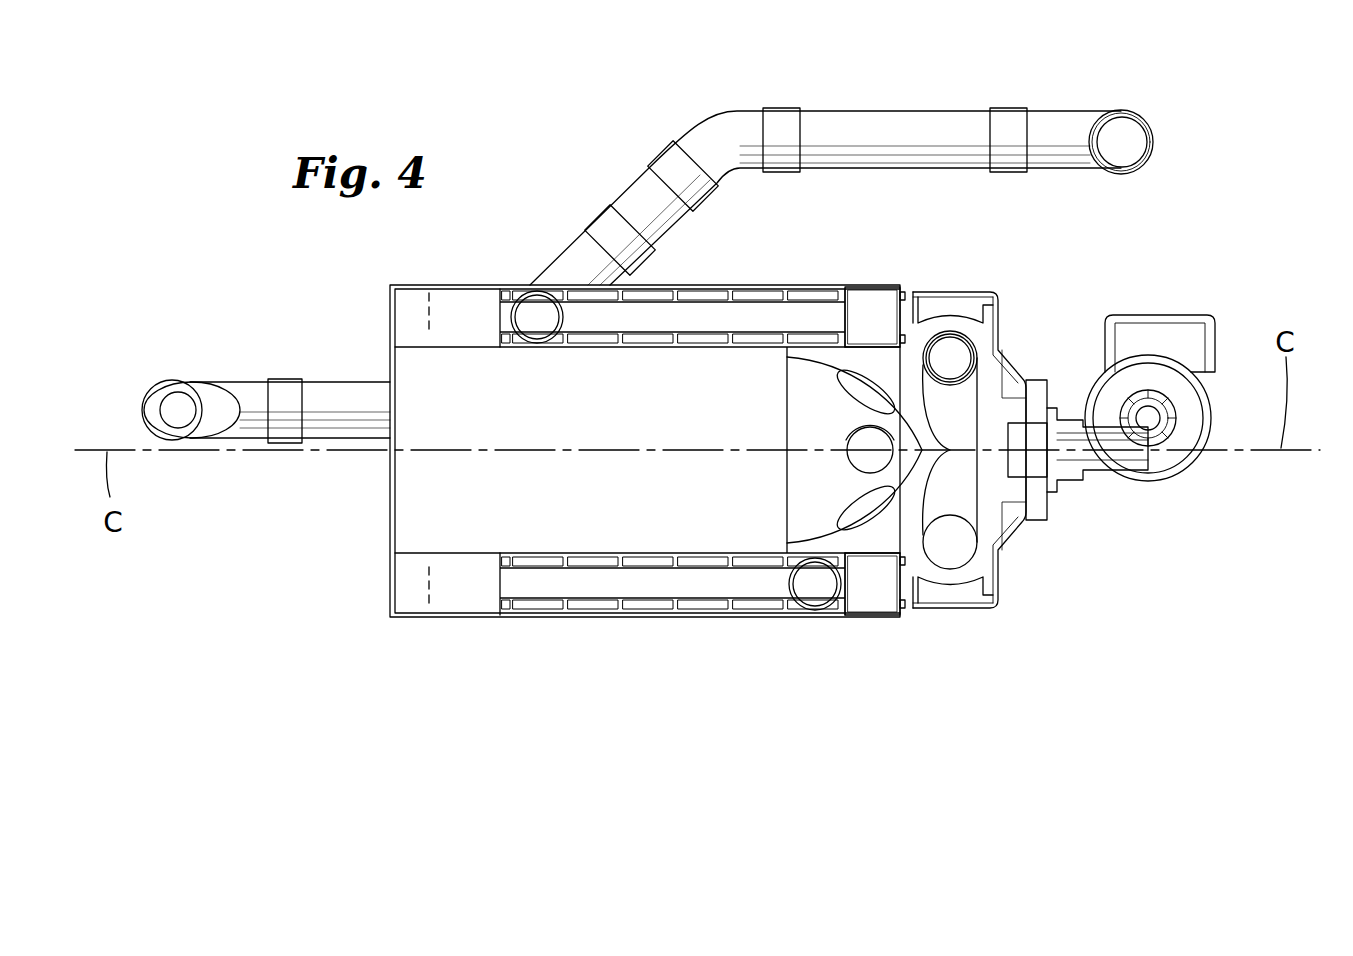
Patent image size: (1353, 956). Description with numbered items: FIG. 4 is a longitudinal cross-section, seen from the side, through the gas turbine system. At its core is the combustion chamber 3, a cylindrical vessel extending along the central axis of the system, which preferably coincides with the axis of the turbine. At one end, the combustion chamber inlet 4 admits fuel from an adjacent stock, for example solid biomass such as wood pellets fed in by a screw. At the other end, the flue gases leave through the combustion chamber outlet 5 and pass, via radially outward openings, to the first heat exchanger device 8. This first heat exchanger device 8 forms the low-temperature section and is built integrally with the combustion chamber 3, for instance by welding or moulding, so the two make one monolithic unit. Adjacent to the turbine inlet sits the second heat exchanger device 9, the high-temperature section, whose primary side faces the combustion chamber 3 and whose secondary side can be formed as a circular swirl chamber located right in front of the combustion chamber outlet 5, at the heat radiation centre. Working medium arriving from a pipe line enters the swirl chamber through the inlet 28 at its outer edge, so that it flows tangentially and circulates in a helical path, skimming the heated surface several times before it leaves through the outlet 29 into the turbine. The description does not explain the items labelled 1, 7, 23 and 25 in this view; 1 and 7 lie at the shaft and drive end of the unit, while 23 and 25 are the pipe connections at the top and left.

The drive shaft 1 is at (1176, 432).
The combustion chamber 3 is at (473, 375).
The combustion chamber inlet 4 is at (378, 436).
The combustion chamber outlet 5 is at (855, 488).
The electric motor 7 is at (1110, 398).
The first heat exchanger device 8 is at (595, 620).
The second heat exchanger device 9 is at (930, 588).
The outlet hose 23 is at (855, 122).
The inlet hose 25 is at (288, 400).
The inlet 28 is at (946, 357).
The outlet 29 is at (1030, 447).